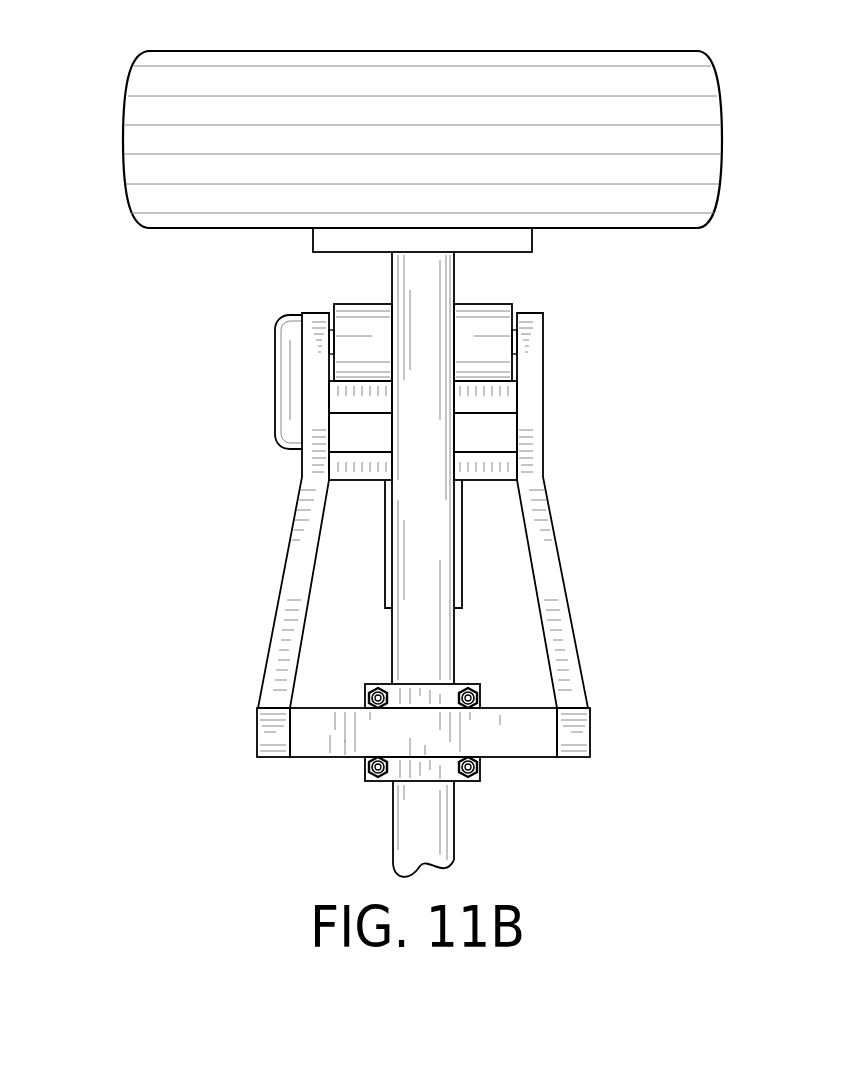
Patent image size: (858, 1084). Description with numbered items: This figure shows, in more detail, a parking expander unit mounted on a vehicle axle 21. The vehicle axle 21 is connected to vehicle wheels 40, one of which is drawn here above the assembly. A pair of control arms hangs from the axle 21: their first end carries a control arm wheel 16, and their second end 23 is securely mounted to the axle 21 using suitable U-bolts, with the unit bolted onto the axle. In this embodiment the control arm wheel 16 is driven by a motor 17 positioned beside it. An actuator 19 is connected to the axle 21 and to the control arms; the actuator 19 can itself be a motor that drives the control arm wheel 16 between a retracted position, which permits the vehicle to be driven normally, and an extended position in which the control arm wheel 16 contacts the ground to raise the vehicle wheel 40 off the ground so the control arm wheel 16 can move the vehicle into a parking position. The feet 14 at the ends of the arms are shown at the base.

The vehicle wheel 40 is at (722, 140).
The control arm wheel 16 is at (487, 304).
The motor 17 is at (288, 368).
The actuator 19 is at (462, 550).
The vehicle axle 21 is at (392, 638).
The second end 23 is at (438, 741).
The feet 14 is at (262, 734).